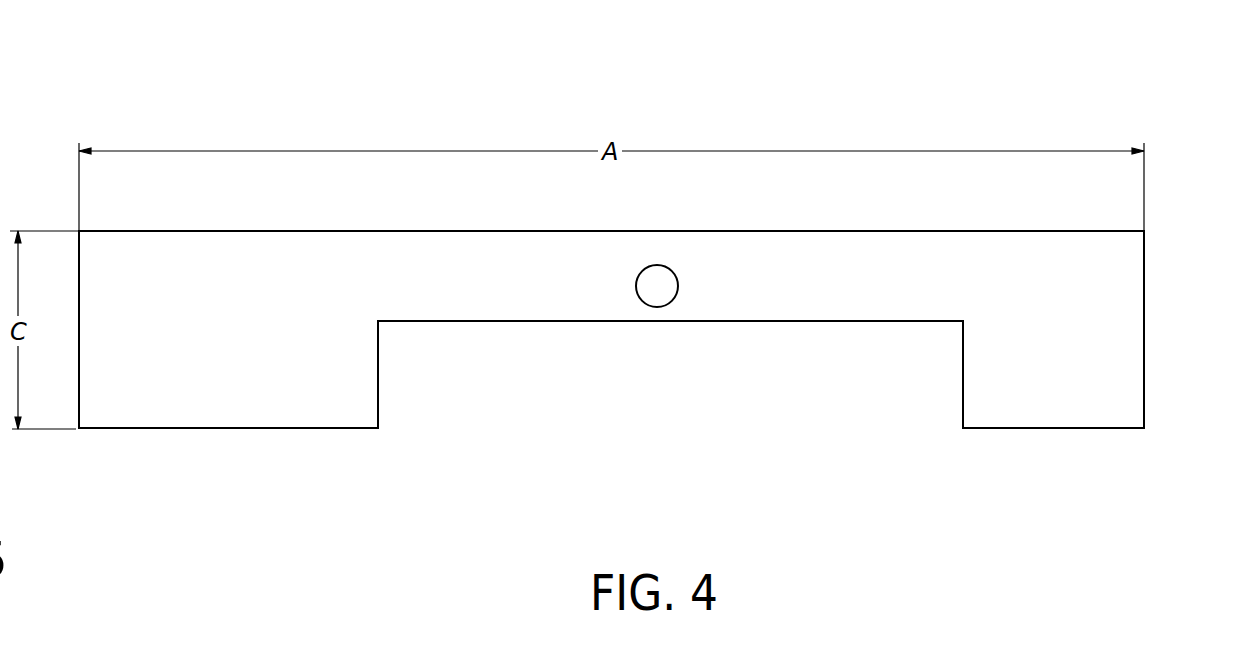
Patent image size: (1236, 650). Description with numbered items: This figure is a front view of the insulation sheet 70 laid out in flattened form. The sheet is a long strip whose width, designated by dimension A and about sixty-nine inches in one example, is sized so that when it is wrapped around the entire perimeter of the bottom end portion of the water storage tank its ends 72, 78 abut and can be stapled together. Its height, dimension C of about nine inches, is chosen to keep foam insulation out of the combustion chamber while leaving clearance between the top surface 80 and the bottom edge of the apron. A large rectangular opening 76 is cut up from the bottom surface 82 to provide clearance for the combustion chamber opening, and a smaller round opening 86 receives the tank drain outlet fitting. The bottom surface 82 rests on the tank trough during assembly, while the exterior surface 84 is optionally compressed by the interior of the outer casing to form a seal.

The insulation sheet 70 is at (960, 109).
The end 72 is at (1145, 272).
The opening 76 is at (378, 390).
The end 78 is at (79, 278).
The top surface 80 is at (955, 228).
The bottom surface 82 is at (1032, 428).
The exterior surface 84 is at (212, 357).
The opening 86 is at (674, 268).